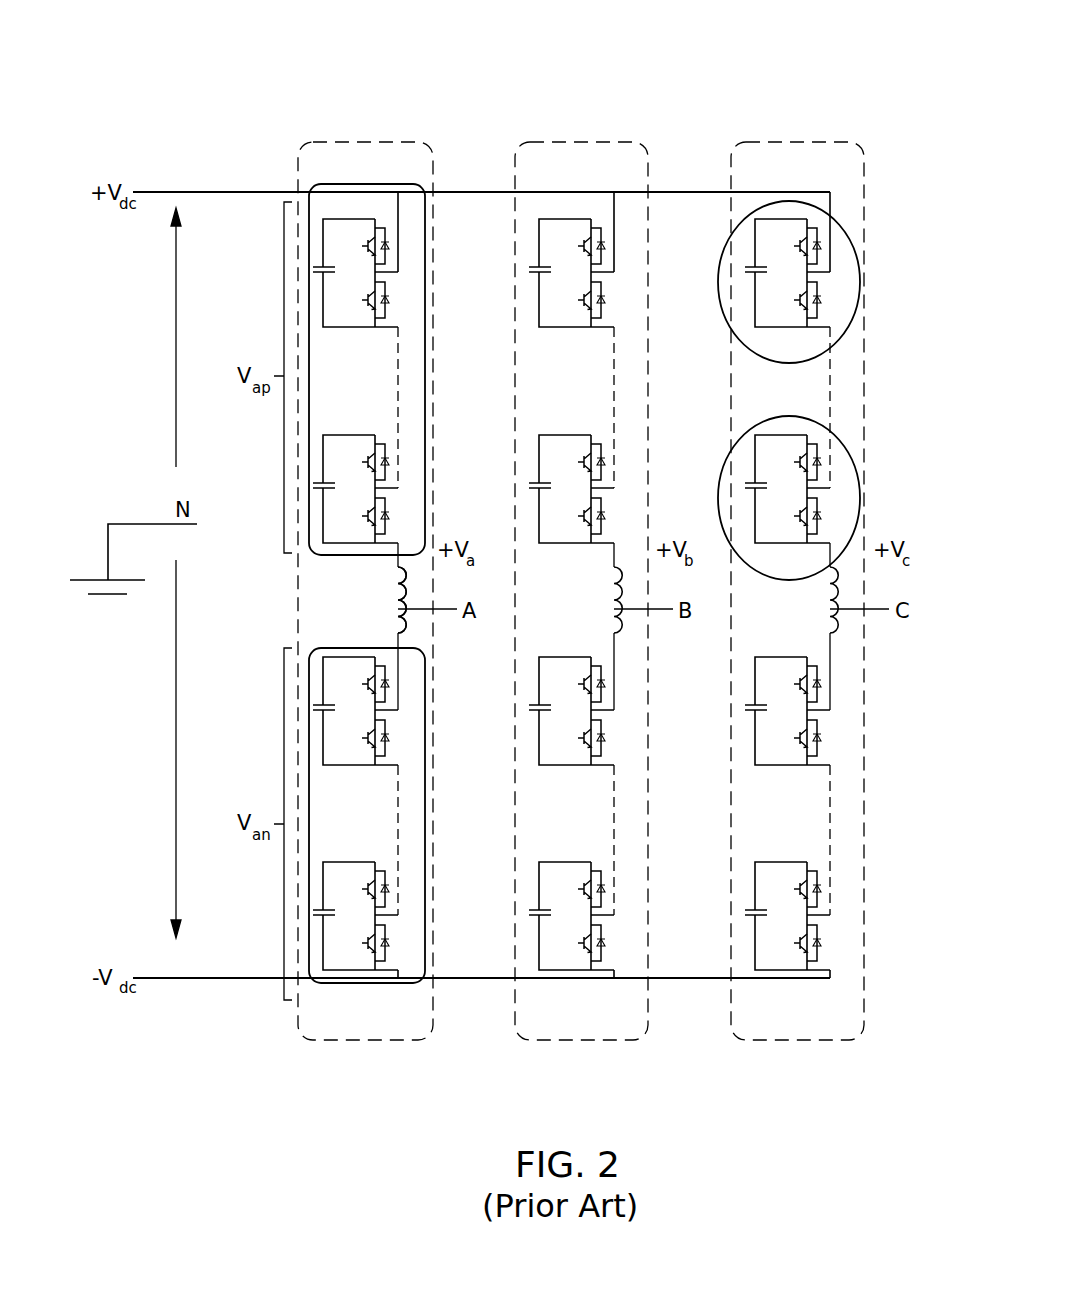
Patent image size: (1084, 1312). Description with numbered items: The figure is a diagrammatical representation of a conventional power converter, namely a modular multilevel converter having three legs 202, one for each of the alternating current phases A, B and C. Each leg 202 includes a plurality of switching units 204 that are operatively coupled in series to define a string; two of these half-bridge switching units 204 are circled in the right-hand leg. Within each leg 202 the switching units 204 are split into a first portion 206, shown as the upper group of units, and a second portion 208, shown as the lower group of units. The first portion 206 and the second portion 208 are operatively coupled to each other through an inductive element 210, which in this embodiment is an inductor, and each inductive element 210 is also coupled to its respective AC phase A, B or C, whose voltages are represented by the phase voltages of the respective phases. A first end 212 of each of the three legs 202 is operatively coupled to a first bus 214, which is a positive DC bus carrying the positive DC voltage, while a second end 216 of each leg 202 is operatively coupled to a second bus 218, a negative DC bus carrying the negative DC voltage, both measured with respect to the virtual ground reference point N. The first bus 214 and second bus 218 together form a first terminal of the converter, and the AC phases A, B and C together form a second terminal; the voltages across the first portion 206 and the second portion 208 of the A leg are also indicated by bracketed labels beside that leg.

The leg 202 is at (782, 142).
The switching unit 204 is at (843, 452).
The first portion 206 is at (309, 535).
The second portion 208 is at (309, 750).
The inductive element 210 is at (398, 612).
The first end 212 is at (613, 210).
The first bus 214 is at (188, 192).
The second end 216 is at (613, 968).
The second bus 218 is at (240, 978).